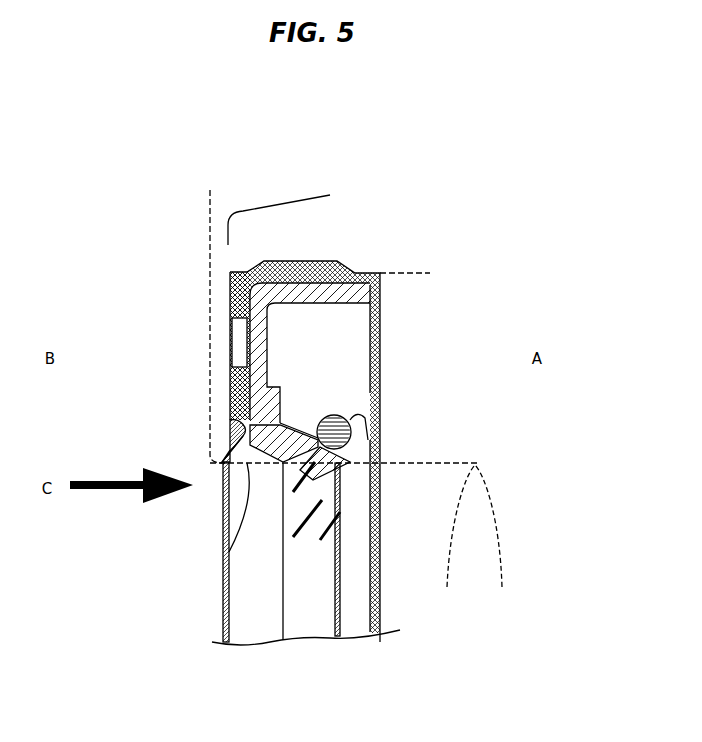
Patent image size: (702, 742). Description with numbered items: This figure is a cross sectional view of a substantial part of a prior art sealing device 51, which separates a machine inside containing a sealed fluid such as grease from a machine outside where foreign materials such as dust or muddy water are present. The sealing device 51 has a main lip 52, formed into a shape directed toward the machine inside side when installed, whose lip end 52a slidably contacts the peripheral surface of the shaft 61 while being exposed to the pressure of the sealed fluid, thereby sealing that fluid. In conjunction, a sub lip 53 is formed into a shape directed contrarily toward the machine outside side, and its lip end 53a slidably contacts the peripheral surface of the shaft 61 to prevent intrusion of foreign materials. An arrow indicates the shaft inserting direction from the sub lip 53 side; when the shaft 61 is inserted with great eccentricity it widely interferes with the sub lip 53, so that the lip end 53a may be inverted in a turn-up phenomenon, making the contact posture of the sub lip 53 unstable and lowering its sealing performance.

The sealing device 51 is at (375, 272).
The main lip 52 is at (340, 562).
The lip end 52a is at (340, 477).
The sub lip 53 is at (230, 538).
The lip end 53a is at (222, 470).
The shaft 61 is at (437, 473).